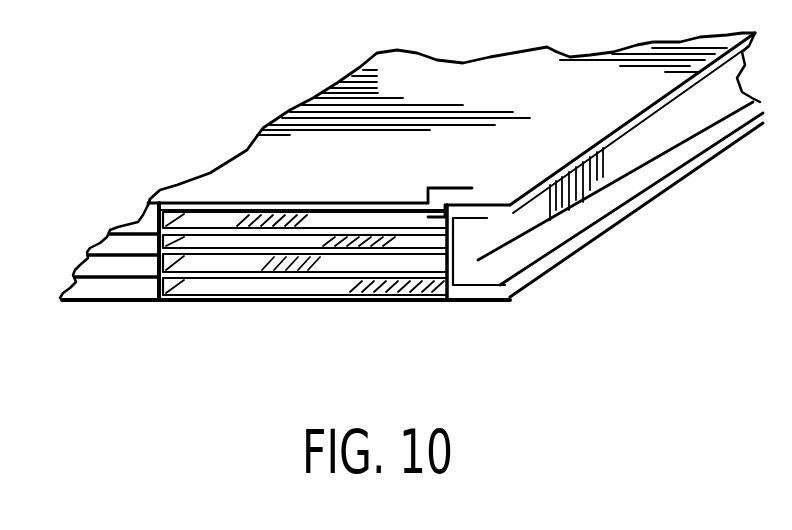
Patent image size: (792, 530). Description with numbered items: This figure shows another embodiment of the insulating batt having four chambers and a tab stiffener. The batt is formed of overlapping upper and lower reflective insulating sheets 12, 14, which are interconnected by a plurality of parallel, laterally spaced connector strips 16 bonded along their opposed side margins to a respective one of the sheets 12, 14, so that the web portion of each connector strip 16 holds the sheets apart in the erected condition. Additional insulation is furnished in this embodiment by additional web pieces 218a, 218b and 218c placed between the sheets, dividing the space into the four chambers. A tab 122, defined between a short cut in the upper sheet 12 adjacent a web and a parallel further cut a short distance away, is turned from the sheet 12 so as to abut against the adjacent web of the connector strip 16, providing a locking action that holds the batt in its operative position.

The upper reflective insulating sheet 12 is at (529, 105).
The tab 122 is at (437, 192).
The lower reflective insulating sheet 14 is at (189, 286).
The web piece 218a is at (296, 228).
The web piece 218b is at (295, 250).
The web piece 218c is at (387, 272).
The connector strip 16 is at (466, 239).